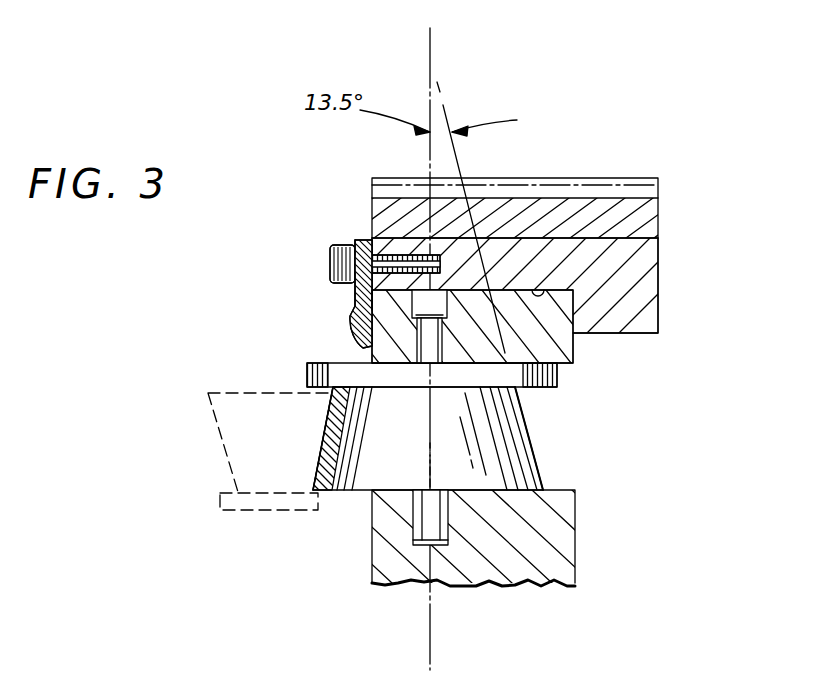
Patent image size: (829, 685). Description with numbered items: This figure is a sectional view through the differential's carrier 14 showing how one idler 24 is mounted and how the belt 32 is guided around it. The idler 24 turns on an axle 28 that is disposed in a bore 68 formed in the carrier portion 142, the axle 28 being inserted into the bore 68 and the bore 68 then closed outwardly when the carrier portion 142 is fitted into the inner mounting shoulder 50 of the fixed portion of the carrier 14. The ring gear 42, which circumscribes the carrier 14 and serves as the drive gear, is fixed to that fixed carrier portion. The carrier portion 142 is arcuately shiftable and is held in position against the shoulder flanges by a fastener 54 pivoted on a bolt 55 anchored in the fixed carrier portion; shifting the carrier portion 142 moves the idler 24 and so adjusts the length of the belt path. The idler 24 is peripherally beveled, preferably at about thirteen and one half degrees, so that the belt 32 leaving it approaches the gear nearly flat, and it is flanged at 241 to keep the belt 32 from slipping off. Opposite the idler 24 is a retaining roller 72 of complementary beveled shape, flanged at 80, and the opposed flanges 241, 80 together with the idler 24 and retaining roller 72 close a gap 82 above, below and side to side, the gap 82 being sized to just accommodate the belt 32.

The carrier 14 is at (652, 159).
The ring gear 42 is at (650, 213).
The carrier portion 142 is at (650, 283).
The inner mounting shoulder 50 is at (541, 296).
The bolt 55 is at (332, 262).
The fastener 54 is at (352, 325).
The bore 68 is at (357, 300).
The flange 241 is at (555, 388).
The idler 24 is at (367, 483).
The gap 82 is at (343, 428).
The belt 32 is at (330, 427).
The axle 28 is at (441, 511).
The retaining roller 72 is at (208, 397).
The flange 80 is at (220, 500).